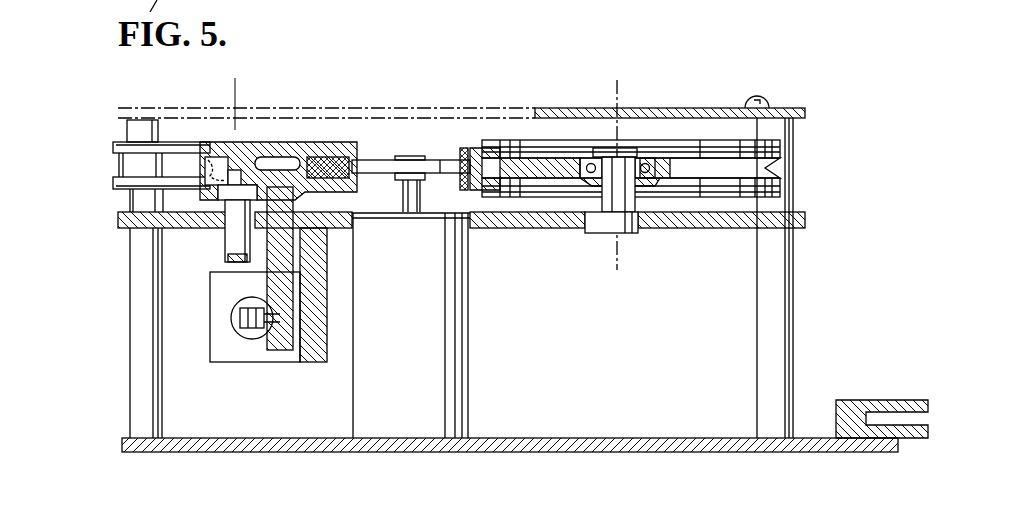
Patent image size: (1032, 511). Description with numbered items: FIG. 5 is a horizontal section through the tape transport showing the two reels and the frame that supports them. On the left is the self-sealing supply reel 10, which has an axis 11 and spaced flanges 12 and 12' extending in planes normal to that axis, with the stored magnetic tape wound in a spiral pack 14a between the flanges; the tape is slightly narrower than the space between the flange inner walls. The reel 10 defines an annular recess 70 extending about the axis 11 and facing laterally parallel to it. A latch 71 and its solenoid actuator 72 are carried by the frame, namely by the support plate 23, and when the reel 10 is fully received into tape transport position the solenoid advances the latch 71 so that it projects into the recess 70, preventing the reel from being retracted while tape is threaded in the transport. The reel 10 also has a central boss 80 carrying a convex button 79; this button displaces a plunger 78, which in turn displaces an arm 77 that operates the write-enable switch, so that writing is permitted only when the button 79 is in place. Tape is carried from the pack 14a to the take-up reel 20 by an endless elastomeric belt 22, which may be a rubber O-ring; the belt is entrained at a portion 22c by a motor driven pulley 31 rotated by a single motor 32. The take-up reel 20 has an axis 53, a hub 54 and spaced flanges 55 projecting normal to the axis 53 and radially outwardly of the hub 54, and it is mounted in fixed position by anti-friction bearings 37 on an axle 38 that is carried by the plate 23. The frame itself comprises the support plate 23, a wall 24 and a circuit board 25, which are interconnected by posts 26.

The supply reel 10 is at (92, 180).
The axis 11 is at (235, 96).
The flange 12 is at (128, 142).
The flange 12' is at (126, 200).
The tape pack 14a is at (325, 157).
The take-up reel 20 is at (782, 172).
The endless belt 22 is at (370, 160).
The belt portion 22c is at (432, 160).
The support plate 23 is at (700, 218).
The wall 24 is at (682, 108).
The circuit board 25 is at (590, 452).
The posts 26 is at (142, 345).
The motor driven pulley 31 is at (413, 156).
The motor 32 is at (426, 356).
The anti-friction bearings 37 is at (562, 186).
The axle 38 is at (612, 203).
The axis 53 is at (615, 80).
The hub 54 is at (488, 160).
The flanges 55 is at (466, 148).
The annular recess 70 is at (272, 150).
The latch 71 is at (283, 185).
The solenoid actuator 72 is at (228, 352).
The arm 77 is at (230, 270).
The plunger 78 is at (228, 248).
The button 79 is at (218, 198).
The central boss 80 is at (222, 138).